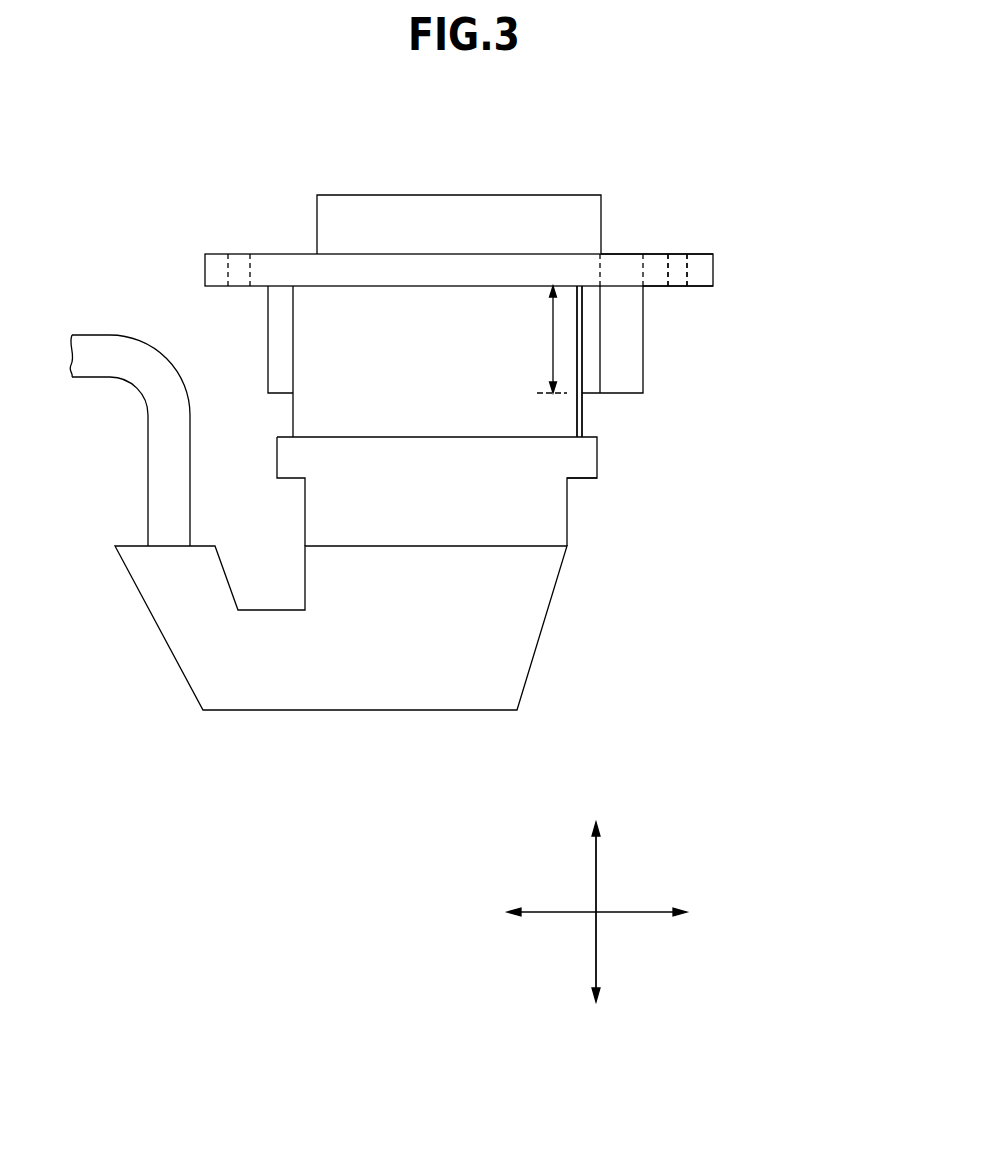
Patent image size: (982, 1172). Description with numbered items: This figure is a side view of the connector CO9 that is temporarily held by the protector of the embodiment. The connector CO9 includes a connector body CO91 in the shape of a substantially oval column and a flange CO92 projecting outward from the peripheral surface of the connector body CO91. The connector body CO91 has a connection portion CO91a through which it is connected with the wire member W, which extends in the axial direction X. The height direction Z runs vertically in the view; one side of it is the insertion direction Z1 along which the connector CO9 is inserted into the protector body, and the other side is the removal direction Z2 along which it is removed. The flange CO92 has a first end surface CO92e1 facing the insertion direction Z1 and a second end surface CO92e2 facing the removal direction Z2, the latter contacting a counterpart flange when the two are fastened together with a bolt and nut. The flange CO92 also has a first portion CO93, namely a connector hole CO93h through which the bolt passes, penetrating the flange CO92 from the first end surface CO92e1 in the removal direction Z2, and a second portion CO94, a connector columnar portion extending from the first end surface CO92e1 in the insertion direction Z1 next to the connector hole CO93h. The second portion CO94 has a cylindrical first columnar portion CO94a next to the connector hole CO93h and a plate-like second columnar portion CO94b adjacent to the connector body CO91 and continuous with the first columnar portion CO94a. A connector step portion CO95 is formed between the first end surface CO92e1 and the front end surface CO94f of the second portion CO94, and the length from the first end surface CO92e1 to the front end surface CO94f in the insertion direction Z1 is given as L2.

The connector CO9 is at (608, 154).
The connector body CO91 is at (389, 353).
The connection portion CO91a is at (500, 650).
The flange CO92 is at (713, 270).
The first end surface CO92e1 is at (704, 288).
The second end surface CO92e2 is at (703, 254).
The first portion CO93 is at (702, 220).
The connector hole CO93h is at (688, 279).
The second portion CO94 is at (762, 368).
The first columnar portion CO94a is at (625, 375).
The second columnar portion CO94b is at (588, 385).
The front end surface CO94f is at (582, 395).
The connector step portion CO95 is at (666, 328).
The length L2 is at (553, 338).
The wire member W is at (95, 335).
The height direction Z is at (597, 880).
The axial direction X is at (640, 914).
The insertion direction Z1 is at (596, 1008).
The removal direction Z2 is at (596, 894).